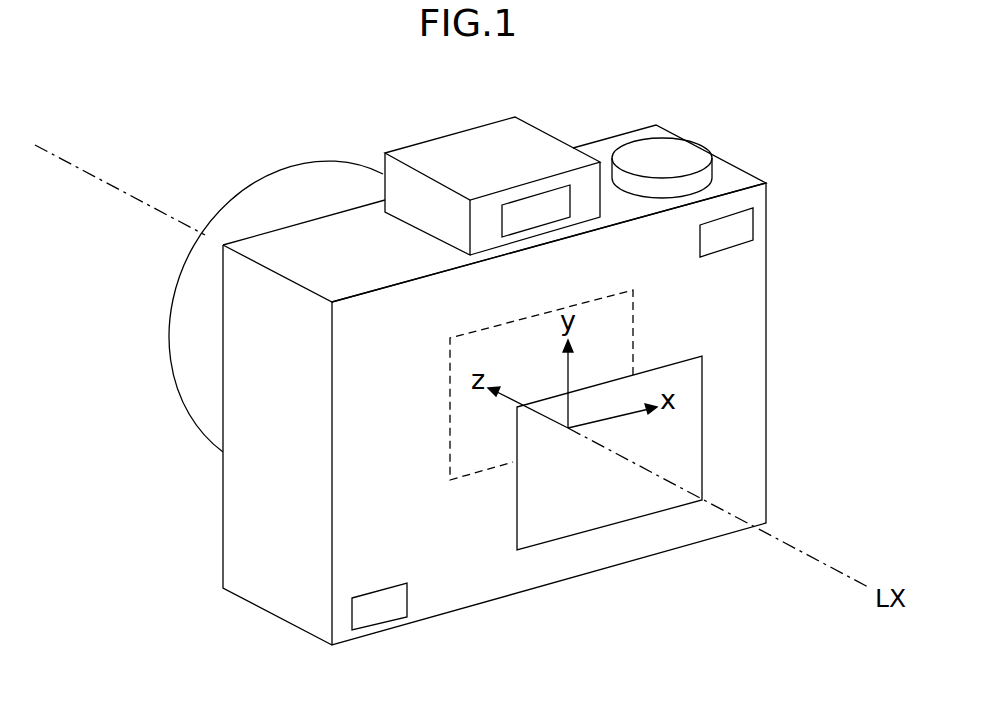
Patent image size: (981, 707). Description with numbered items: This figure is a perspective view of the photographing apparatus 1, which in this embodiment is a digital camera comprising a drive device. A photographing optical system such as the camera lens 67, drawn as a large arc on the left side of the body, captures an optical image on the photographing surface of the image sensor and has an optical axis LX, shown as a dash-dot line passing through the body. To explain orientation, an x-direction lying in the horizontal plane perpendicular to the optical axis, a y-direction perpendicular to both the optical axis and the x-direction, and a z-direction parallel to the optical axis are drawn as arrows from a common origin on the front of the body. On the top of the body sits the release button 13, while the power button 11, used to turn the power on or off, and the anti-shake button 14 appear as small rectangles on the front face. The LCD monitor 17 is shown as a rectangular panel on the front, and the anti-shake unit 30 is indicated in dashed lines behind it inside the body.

The photographing apparatus 1 is at (656, 126).
The camera lens 67 is at (330, 160).
The release button 13 is at (700, 146).
The power button 11 is at (757, 223).
The anti-shake button 14 is at (380, 623).
The LCD monitor 17 is at (670, 367).
The anti-shake unit 30 is at (603, 290).